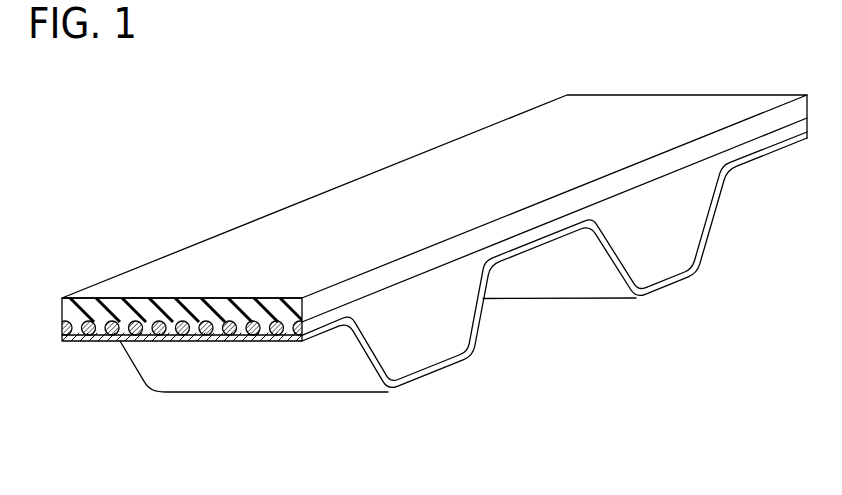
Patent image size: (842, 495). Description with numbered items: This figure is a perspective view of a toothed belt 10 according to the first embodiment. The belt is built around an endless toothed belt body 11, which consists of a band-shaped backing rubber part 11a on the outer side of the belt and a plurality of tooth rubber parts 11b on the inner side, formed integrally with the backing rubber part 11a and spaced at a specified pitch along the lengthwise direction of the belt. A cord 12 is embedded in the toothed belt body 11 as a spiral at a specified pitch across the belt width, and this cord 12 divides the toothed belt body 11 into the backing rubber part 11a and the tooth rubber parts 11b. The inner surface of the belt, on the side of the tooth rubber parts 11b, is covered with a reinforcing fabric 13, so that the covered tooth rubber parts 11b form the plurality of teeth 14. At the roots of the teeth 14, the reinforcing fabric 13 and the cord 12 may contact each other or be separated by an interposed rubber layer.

The toothed belt 10 is at (393, 91).
The toothed belt body 11 is at (316, 197).
The backing rubber part 11a is at (537, 216).
The tooth rubber parts 11b is at (648, 276).
The cord 12 is at (227, 320).
The reinforcing fabric 13 is at (100, 342).
The teeth 14 is at (267, 395).